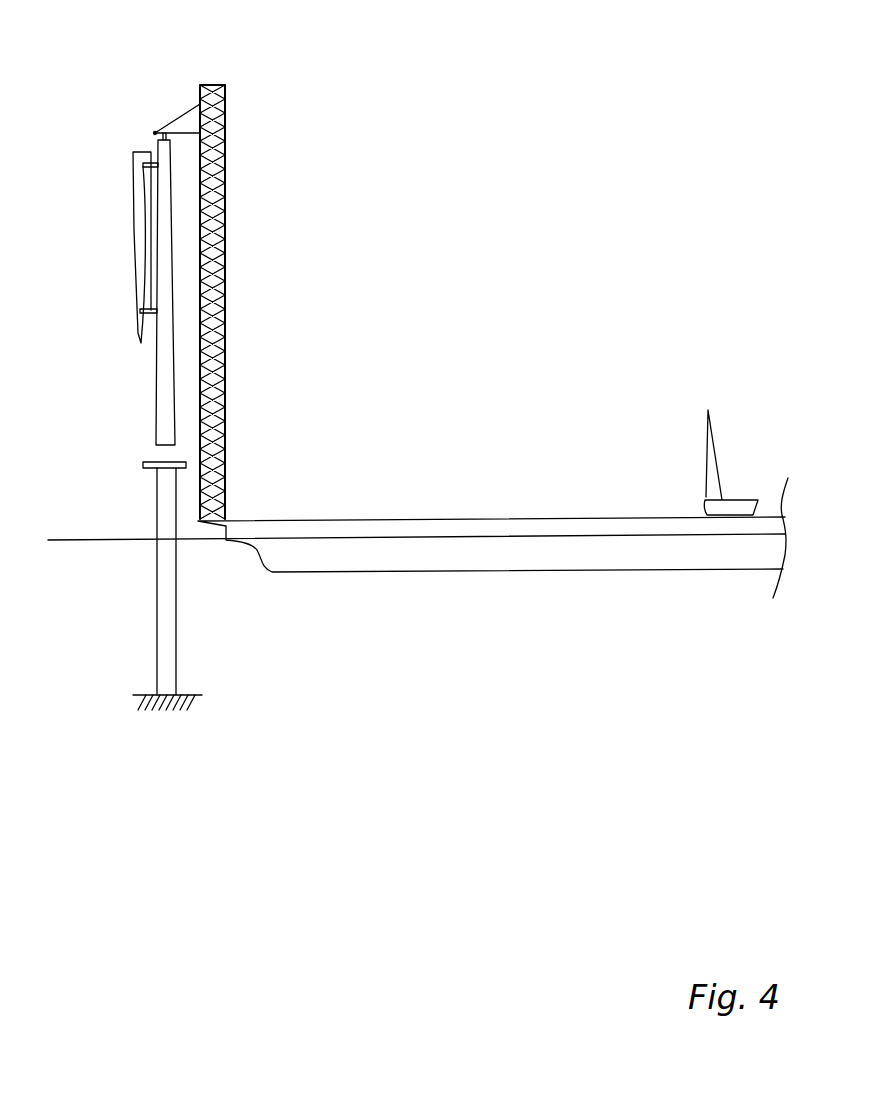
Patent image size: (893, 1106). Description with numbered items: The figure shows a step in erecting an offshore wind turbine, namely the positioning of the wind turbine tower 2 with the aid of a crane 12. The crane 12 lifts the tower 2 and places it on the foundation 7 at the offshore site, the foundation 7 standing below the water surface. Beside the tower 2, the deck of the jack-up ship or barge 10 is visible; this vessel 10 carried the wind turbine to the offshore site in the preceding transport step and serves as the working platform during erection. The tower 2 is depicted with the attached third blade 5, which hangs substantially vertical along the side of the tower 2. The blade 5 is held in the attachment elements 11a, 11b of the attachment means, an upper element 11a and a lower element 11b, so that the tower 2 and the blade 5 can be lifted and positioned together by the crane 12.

The wind turbine tower 2 is at (156, 420).
The third blade 5 is at (136, 195).
The foundation 7 is at (161, 627).
The jack-up ship or barge 10 is at (457, 565).
The attachment element 11a is at (150, 163).
The attachment element 11b is at (140, 313).
The crane 12 is at (226, 106).